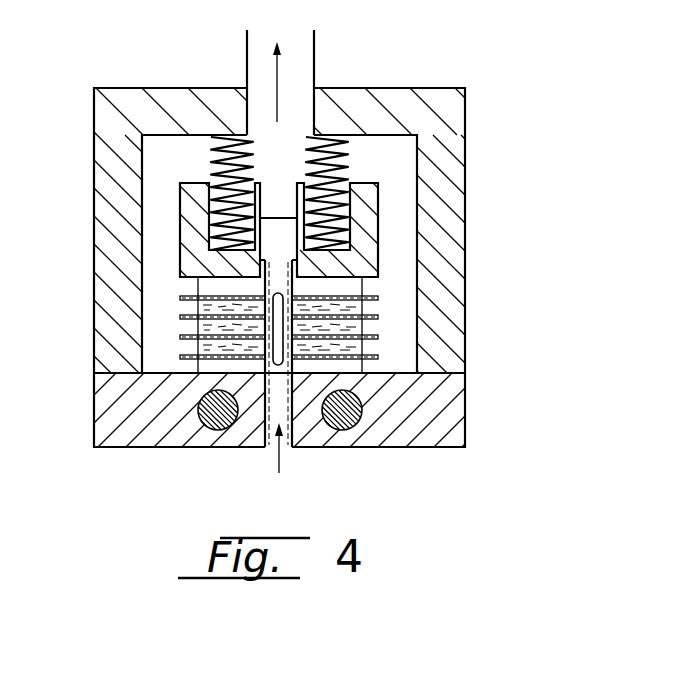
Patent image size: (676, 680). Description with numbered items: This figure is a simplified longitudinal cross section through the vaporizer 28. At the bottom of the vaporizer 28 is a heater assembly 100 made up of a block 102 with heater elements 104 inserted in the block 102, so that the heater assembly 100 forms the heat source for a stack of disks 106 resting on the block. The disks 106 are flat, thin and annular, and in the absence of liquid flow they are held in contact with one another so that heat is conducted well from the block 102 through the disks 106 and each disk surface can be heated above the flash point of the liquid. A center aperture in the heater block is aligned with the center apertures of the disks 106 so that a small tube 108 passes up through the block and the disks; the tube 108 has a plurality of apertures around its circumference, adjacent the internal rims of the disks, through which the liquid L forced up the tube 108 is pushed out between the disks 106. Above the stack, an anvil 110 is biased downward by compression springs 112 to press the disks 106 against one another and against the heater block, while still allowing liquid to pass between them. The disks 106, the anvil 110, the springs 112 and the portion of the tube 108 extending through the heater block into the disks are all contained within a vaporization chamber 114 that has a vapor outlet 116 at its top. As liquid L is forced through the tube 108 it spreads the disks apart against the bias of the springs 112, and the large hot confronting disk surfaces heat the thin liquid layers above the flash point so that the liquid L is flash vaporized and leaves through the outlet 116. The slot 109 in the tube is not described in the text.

The vaporizer 28 is at (466, 175).
The heater assembly 100 is at (93, 409).
The block 102 is at (136, 425).
The heater elements 104 is at (223, 418).
The stack of disks 106 is at (378, 300).
The tube 108 is at (268, 281).
The tube slot 109 is at (283, 310).
The anvil 110 is at (358, 193).
The compression springs 112 is at (213, 140).
The vaporization chamber 114 is at (150, 200).
The vapor outlet 116 is at (305, 49).
The liquid L is at (182, 305).